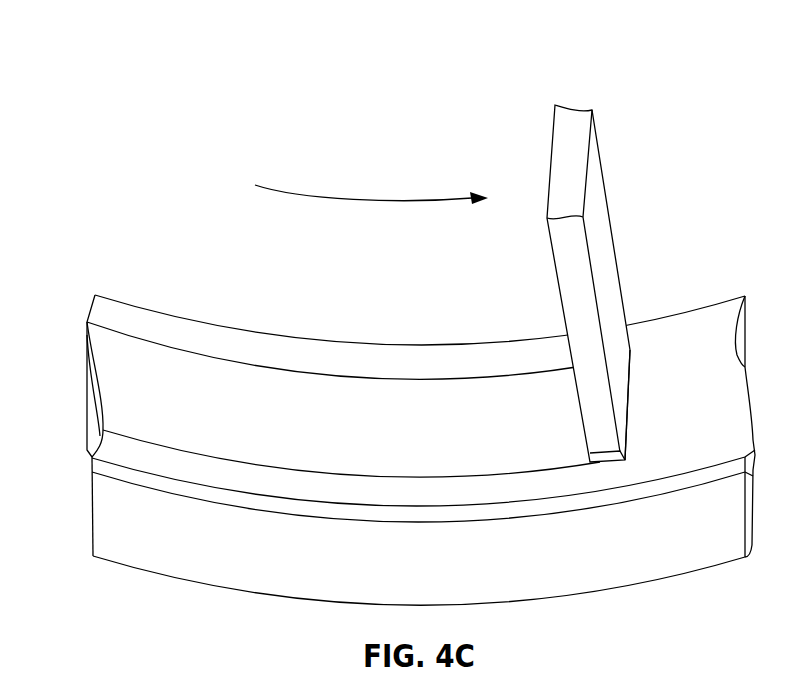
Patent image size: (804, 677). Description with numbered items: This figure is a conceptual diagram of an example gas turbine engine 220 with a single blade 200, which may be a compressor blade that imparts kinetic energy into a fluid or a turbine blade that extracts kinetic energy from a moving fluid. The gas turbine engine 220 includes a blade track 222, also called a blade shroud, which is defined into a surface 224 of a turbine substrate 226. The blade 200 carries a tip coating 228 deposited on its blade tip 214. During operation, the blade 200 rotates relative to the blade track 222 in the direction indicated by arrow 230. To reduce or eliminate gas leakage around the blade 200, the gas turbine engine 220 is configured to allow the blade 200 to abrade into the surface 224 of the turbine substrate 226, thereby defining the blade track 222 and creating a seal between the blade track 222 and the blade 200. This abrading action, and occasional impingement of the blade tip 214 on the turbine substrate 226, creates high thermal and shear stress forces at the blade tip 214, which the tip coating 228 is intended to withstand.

The gas turbine engine 220 is at (156, 50).
The blade track 222 is at (186, 282).
The surface 224 is at (703, 320).
The turbine substrate 226 is at (103, 517).
The tip coating 228 is at (584, 463).
The arrow 230 is at (336, 197).
The blade 200 is at (638, 203).
The blade tip 214 is at (632, 408).